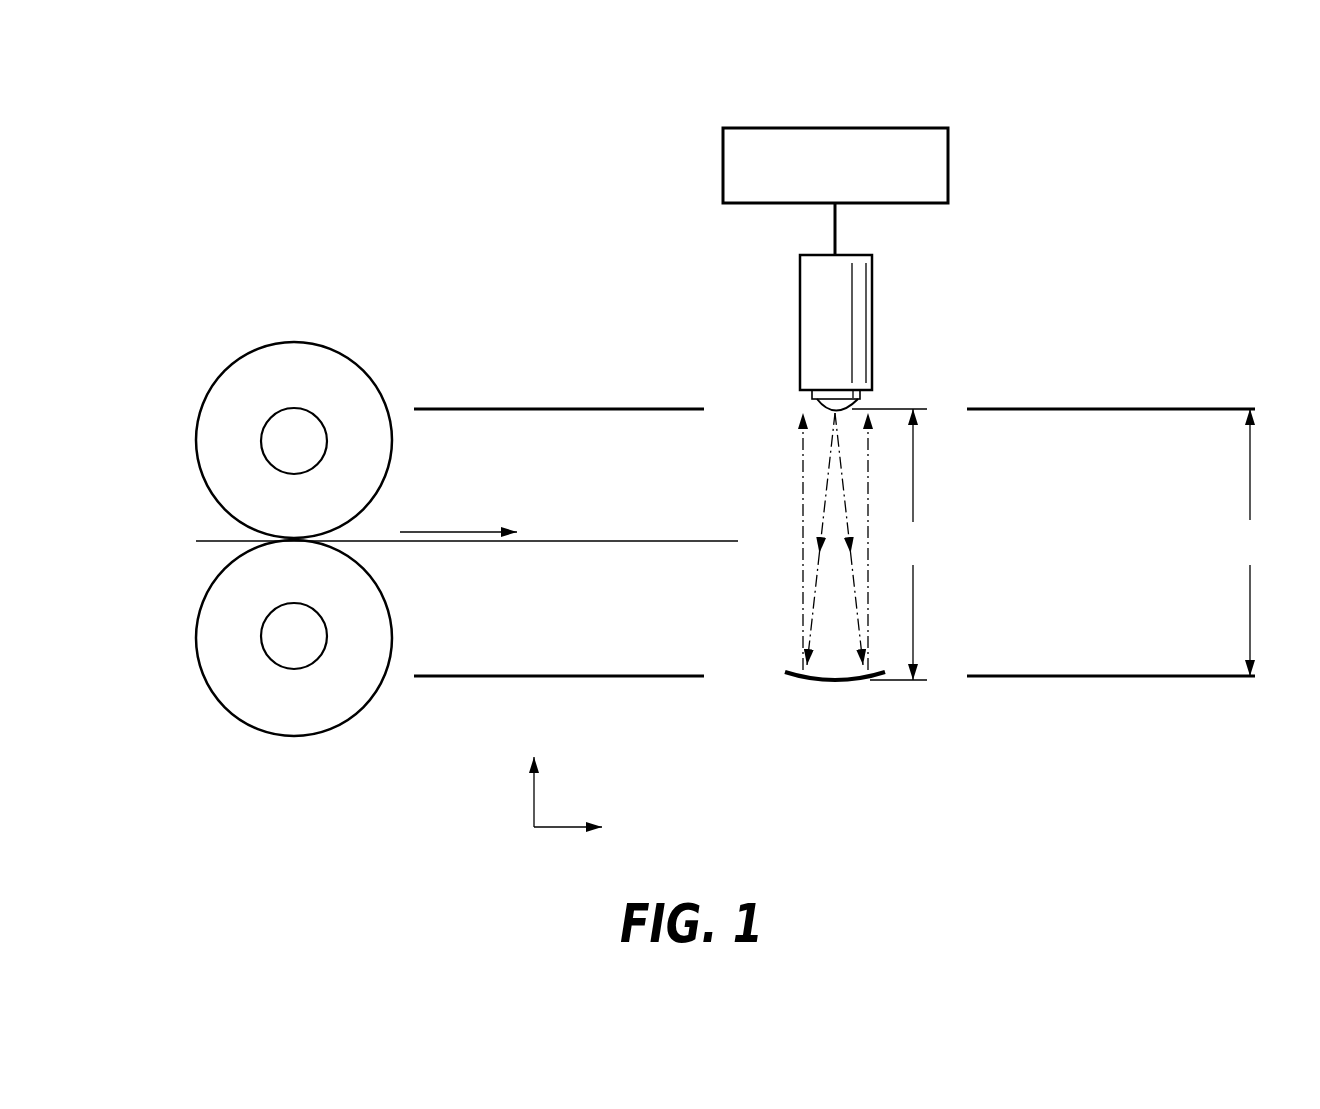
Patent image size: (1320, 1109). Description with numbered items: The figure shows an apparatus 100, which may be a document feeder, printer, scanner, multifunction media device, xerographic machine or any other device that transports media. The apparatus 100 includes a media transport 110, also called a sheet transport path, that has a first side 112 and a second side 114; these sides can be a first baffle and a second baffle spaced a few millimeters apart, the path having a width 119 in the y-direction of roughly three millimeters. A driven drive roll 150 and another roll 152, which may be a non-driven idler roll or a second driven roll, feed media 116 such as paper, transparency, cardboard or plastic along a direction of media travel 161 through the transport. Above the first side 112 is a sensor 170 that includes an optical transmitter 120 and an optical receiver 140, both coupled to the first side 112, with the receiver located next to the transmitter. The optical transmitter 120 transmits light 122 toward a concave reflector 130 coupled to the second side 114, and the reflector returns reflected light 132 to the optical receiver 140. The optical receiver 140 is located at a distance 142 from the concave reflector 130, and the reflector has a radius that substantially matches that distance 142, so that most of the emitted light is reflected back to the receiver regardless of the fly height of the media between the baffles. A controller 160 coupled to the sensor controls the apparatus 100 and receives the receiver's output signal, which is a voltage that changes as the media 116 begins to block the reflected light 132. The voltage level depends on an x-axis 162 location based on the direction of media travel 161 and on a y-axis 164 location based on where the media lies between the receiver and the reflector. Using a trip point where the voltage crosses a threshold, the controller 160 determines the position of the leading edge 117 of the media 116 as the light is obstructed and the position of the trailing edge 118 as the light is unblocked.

The apparatus 100 is at (1047, 115).
The media transport 110 is at (1100, 370).
The first side 112 is at (1102, 409).
The second side 114 is at (1102, 676).
The media 116 is at (468, 543).
The leading edge 117 is at (738, 540).
The trailing edge 118 is at (195, 547).
The width of sheet transport path 119 is at (1255, 542).
The optical transmitter 120 is at (822, 404).
The light 122 is at (815, 565).
The concave reflector 130 is at (835, 682).
The reflected light 132 is at (802, 512).
The optical receiver 140 is at (807, 395).
The distance 142 is at (905, 544).
The driven drive roll 150 is at (330, 355).
The another roll 152 is at (330, 715).
The controller 160 is at (723, 167).
The direction of media travel 161 is at (477, 530).
The x-axis 162 is at (570, 828).
The y-axis 164 is at (532, 792).
The sensor 170 is at (813, 337).